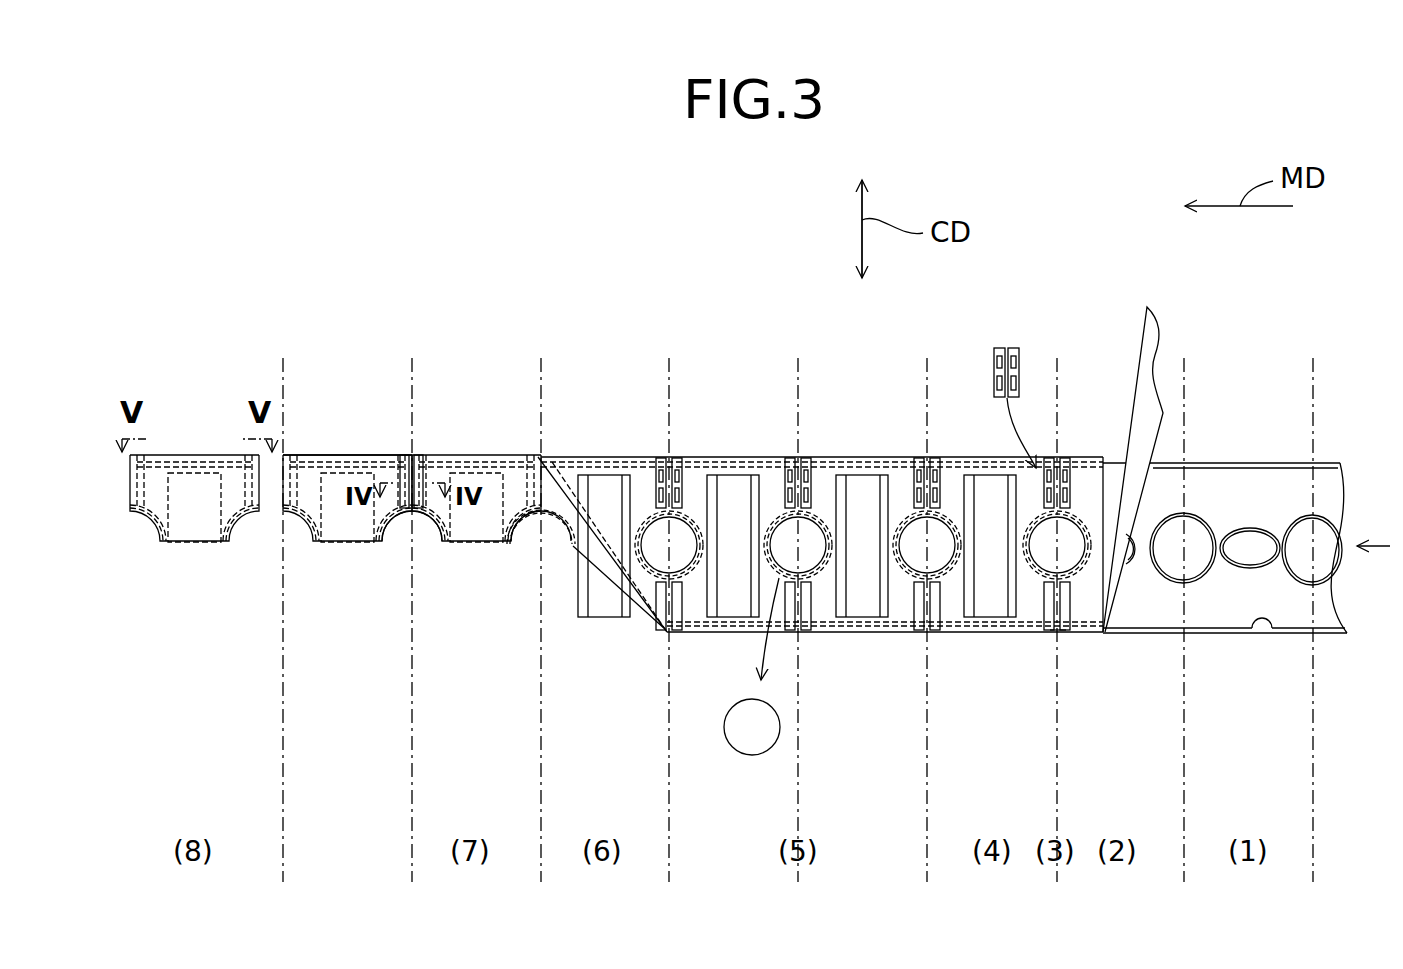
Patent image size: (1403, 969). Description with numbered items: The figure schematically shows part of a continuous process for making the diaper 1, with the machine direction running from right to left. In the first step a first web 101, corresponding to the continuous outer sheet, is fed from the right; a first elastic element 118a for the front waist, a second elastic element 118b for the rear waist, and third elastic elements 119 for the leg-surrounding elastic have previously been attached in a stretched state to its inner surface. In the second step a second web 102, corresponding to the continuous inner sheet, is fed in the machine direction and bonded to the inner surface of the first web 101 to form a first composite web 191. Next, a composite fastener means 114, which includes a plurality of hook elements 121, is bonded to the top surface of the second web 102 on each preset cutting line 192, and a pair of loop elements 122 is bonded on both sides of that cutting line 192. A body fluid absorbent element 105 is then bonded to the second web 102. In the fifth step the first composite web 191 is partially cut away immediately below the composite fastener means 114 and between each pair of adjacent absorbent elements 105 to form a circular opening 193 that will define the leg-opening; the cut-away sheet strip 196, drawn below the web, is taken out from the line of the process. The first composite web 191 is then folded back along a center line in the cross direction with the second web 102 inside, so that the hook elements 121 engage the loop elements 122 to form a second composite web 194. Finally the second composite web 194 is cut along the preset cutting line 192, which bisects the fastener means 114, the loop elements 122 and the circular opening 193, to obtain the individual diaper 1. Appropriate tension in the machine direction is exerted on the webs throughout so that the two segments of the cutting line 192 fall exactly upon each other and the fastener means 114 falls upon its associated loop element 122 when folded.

The diaper 1 is at (188, 430).
The first web 101 is at (1333, 645).
The second web 102 is at (1128, 330).
The body fluid absorbent element 105 is at (732, 487).
The composite fastener means 114 is at (795, 455).
The first elastic element 118a is at (1325, 462).
The second elastic element 118b is at (1253, 636).
The third elastic elements 119 is at (1322, 587).
The hook element 121 is at (1018, 382).
The loop element 122 is at (1030, 620).
The first composite web 191 is at (1066, 648).
The cutting line 192 is at (283, 370).
The circular opening 193 is at (805, 570).
The second composite web 194 is at (356, 450).
The cut-out piece 196 is at (747, 737).